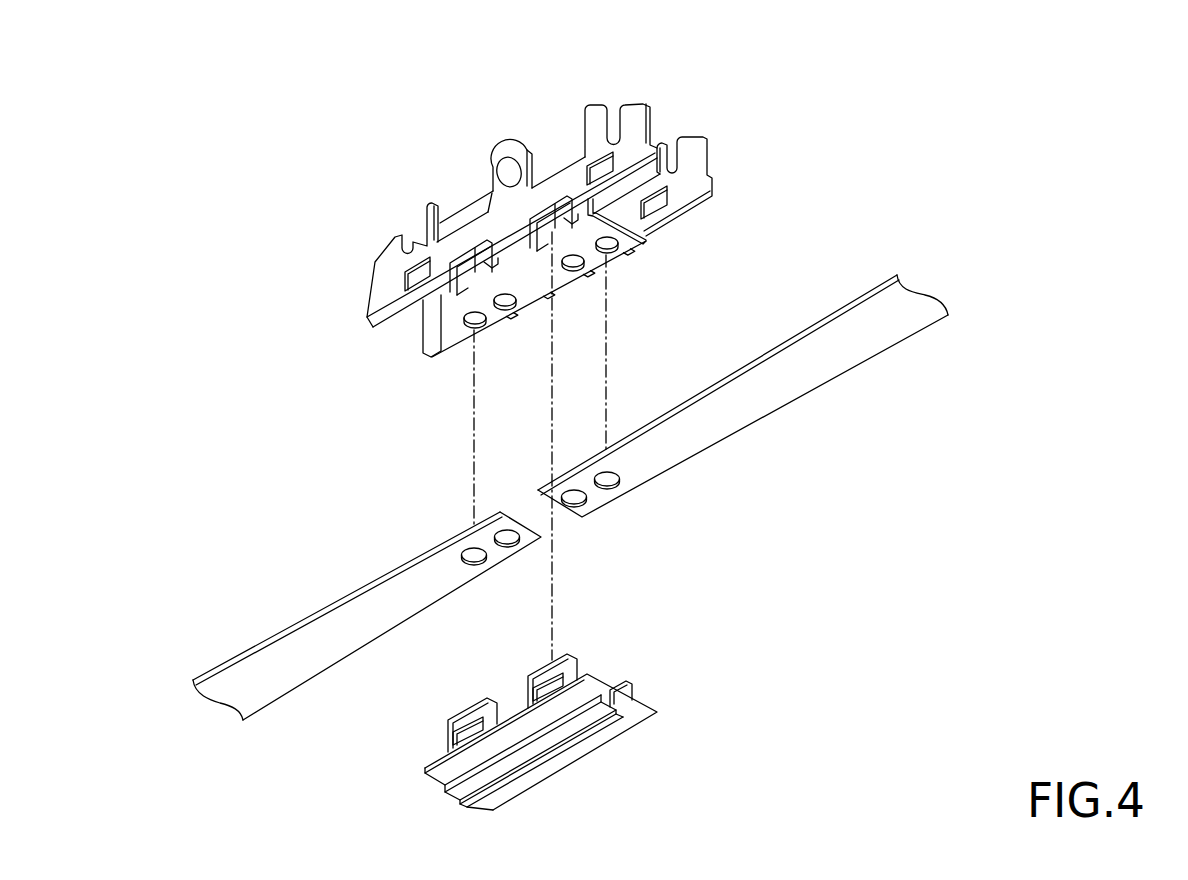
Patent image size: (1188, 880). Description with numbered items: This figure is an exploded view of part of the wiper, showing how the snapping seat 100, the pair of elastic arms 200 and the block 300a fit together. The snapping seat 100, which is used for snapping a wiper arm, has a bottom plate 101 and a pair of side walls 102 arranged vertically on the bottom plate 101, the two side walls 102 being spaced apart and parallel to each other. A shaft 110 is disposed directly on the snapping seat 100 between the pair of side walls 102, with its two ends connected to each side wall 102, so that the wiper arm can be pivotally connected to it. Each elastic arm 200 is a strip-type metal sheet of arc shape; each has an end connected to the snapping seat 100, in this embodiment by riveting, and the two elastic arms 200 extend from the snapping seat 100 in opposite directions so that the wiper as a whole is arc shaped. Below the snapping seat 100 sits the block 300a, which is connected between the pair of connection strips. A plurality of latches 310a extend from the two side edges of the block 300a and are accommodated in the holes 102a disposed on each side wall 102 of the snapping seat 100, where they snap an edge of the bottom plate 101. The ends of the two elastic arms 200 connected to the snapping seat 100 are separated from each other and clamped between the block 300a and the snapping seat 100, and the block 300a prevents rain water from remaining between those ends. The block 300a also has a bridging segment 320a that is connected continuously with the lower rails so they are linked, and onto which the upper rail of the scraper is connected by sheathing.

The snapping seat 100 is at (462, 163).
The bottom plate 101 is at (533, 290).
The side walls 102 is at (430, 343).
The holes 102a is at (542, 216).
The shaft 110 is at (537, 173).
The elastic arms 200 is at (858, 293).
The block 300a is at (608, 752).
The latches 310a is at (577, 662).
The bridging segment 320a is at (570, 743).